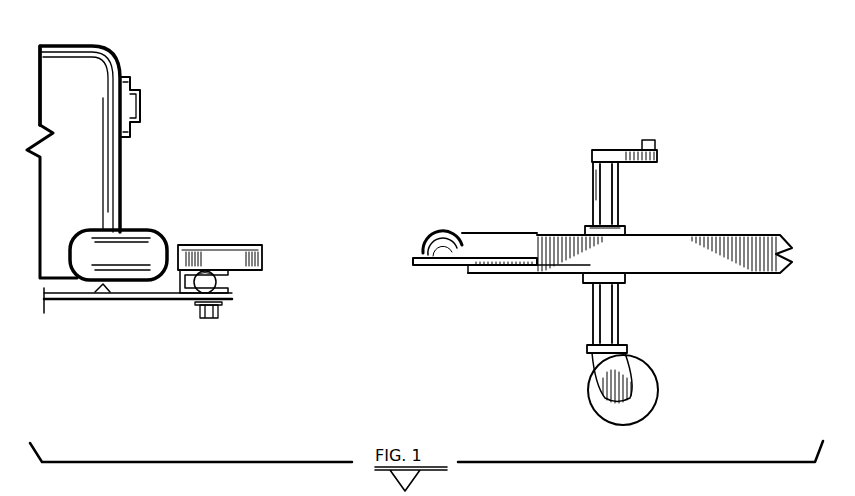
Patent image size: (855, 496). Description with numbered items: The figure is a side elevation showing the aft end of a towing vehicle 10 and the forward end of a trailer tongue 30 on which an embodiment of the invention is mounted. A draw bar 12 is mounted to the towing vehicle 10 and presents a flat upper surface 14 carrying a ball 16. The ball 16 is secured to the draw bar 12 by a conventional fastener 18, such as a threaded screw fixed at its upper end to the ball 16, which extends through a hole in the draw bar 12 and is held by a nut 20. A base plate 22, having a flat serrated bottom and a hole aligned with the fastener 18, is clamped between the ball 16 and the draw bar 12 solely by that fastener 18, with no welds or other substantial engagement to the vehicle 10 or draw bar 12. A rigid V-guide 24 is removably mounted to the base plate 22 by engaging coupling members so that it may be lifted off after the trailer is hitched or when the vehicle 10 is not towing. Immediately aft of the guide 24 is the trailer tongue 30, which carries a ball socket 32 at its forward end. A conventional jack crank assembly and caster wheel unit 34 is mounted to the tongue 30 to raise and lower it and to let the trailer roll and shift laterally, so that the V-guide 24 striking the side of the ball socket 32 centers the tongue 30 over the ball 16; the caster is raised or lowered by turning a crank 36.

The towing vehicle 10 is at (83, 68).
The draw bar 12 is at (65, 300).
The flat upper surface 14 is at (102, 293).
The ball 16 is at (222, 278).
The fastener 18 is at (207, 317).
The nut 20 is at (198, 307).
The base plate 22 is at (227, 288).
The V-guide 24 is at (220, 253).
The tongue 30 is at (633, 243).
The ball socket 32 is at (427, 233).
The jack crank assembly and caster wheel unit 34 is at (648, 362).
The crank 36 is at (615, 150).